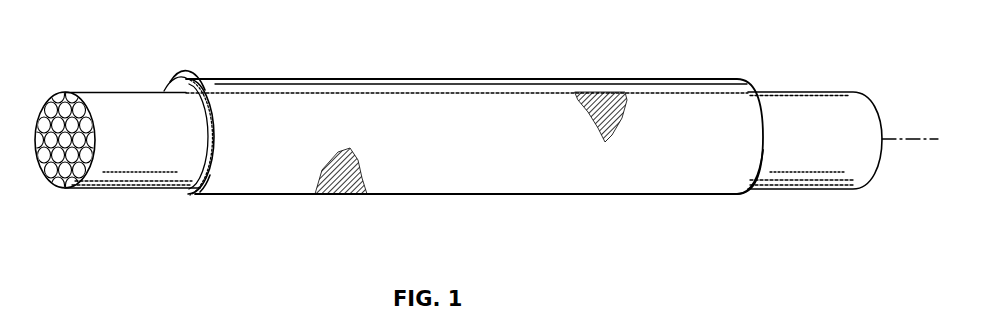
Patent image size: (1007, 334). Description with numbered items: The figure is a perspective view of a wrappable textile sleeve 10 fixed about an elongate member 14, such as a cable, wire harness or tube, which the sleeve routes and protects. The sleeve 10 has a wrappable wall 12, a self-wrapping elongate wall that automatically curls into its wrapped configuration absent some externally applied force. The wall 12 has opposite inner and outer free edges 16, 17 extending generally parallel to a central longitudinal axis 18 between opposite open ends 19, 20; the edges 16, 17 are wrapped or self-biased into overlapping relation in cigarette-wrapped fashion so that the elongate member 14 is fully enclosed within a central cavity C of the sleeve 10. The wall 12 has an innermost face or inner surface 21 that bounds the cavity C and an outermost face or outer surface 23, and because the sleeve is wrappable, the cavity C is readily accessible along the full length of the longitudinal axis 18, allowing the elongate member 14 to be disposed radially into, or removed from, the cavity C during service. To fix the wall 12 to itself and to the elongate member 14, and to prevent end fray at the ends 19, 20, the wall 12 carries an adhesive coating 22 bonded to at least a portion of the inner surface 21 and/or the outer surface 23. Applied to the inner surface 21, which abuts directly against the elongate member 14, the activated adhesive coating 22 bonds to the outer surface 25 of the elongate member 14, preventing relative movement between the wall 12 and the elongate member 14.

The wrappable sleeve 10 is at (565, 69).
The wrappable wall 12 is at (310, 79).
The elongate member 14 is at (800, 108).
The inner free edge 16 is at (184, 91).
The outer free edge 17 is at (217, 91).
The central longitudinal axis 18 is at (900, 138).
The open end 19 is at (172, 193).
The open end 20 is at (752, 196).
The inner surface 21 is at (198, 108).
The adhesive coating 22 is at (233, 174).
The outer surface 23 is at (531, 80).
The outer surface of elongate member 25 is at (812, 157).
The central cavity C is at (203, 132).